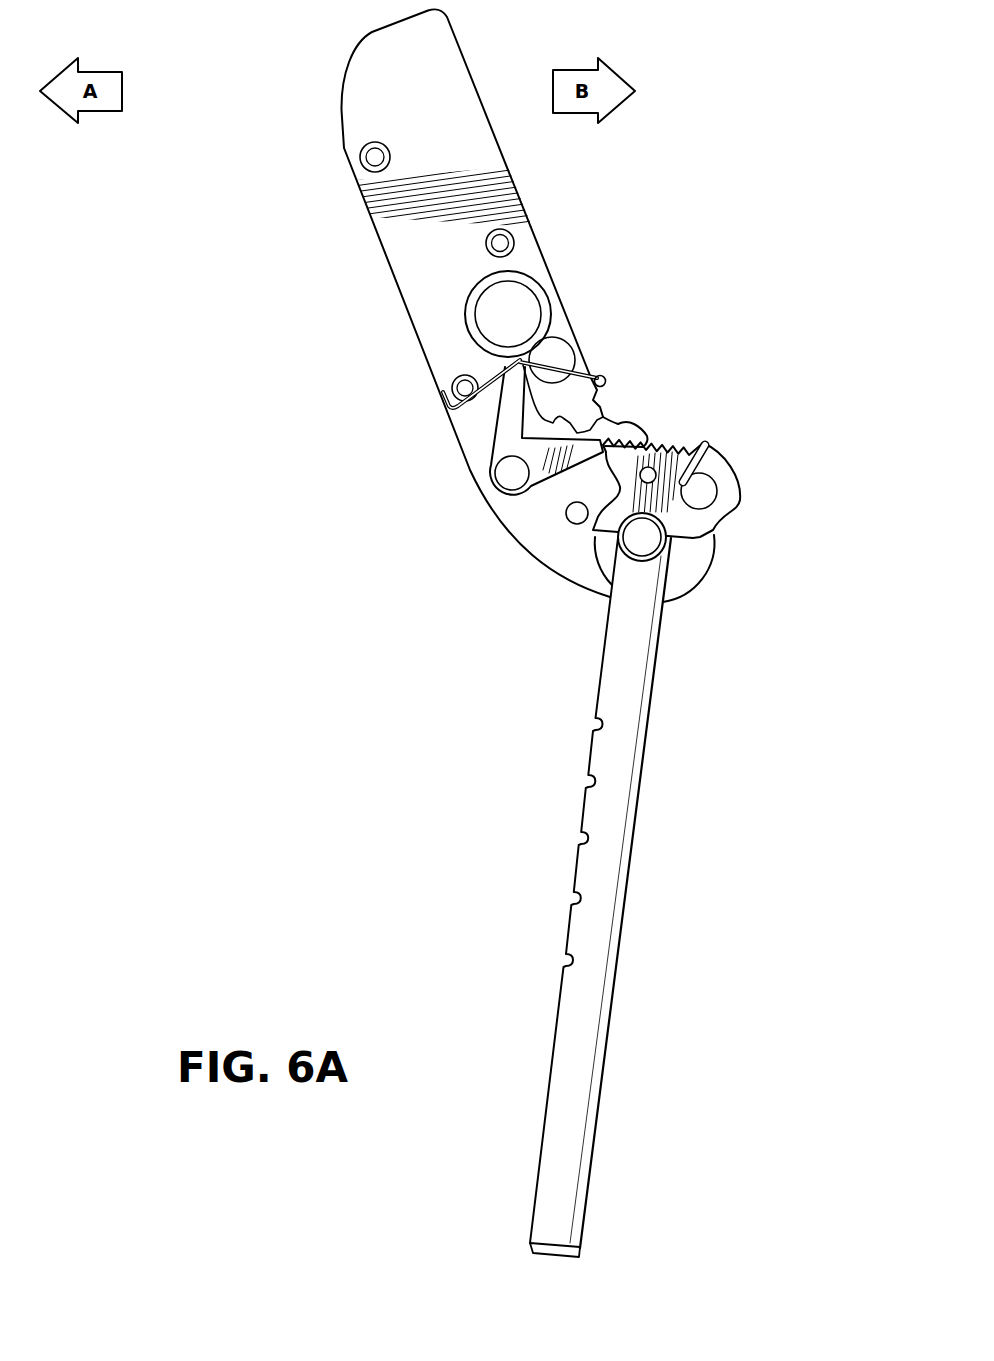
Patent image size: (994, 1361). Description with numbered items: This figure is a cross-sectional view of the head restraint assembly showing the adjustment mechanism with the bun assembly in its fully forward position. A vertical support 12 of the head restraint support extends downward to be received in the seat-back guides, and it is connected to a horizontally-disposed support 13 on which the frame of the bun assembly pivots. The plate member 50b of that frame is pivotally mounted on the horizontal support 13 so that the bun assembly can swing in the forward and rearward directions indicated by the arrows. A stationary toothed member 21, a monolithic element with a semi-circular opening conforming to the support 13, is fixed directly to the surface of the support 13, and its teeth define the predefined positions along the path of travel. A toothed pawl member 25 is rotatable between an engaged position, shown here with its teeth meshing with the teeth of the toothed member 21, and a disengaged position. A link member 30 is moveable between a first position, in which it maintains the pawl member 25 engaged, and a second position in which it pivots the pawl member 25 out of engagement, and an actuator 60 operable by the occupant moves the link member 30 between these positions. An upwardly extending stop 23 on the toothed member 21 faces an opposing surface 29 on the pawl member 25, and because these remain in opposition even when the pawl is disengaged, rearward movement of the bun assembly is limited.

The vertical support 12 is at (630, 748).
The horizontally-disposed support 13 is at (668, 548).
The stationary toothed member 21 is at (683, 482).
The upwardly extending stop 23 is at (707, 443).
The toothed pawl member 25 is at (641, 416).
The opposing surface 29 is at (655, 437).
The link member 30 is at (603, 377).
The plate member 50b is at (359, 190).
The actuator 60 is at (458, 330).